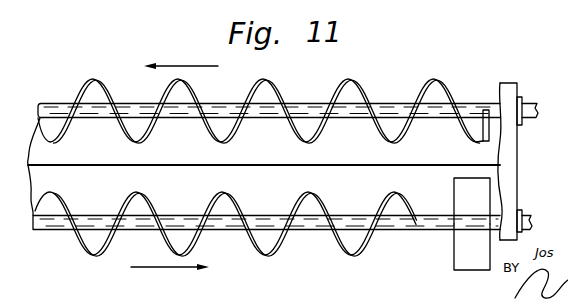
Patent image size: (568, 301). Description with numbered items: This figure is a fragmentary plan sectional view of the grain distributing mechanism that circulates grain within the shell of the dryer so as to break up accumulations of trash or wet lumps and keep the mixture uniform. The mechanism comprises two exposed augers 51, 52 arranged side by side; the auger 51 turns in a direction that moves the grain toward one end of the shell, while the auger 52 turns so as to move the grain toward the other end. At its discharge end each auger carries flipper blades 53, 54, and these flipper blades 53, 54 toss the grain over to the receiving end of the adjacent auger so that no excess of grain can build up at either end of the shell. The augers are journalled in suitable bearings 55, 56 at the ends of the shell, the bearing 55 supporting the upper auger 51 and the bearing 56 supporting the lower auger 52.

The upper helical screw conveyor ribbon 51 is at (390, 133).
The lower helical screw conveyor ribbon 52 is at (270, 246).
The upper portion of baffle plate 53 is at (457, 186).
The lower portion of baffle plate 54 is at (457, 259).
The upper shaft bearing 55 is at (521, 101).
The lower shaft bearing 56 is at (523, 215).